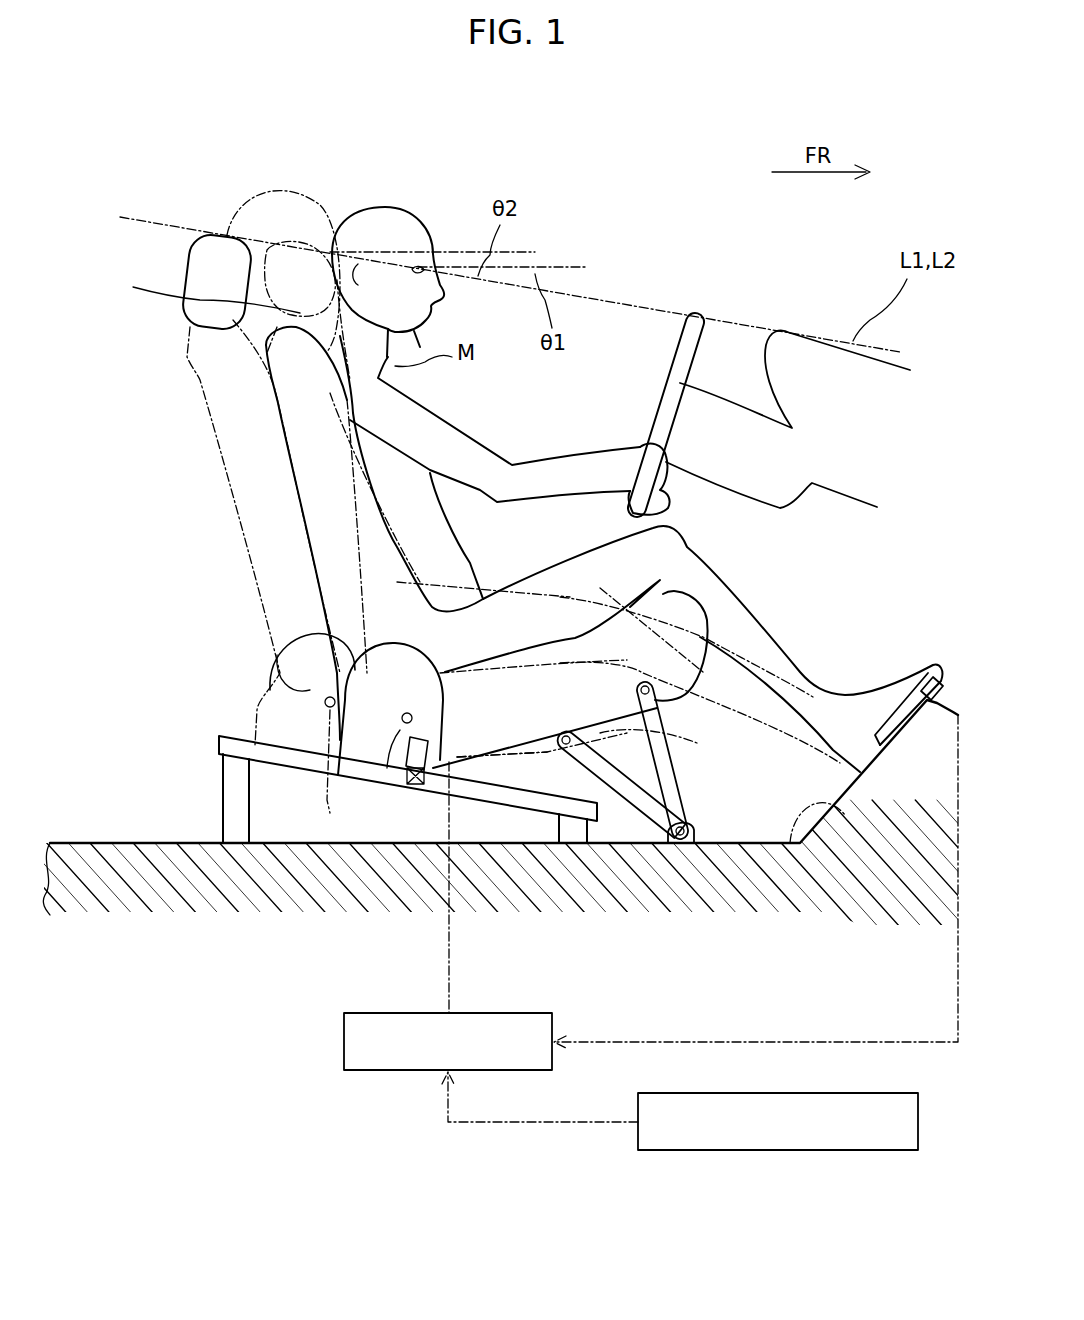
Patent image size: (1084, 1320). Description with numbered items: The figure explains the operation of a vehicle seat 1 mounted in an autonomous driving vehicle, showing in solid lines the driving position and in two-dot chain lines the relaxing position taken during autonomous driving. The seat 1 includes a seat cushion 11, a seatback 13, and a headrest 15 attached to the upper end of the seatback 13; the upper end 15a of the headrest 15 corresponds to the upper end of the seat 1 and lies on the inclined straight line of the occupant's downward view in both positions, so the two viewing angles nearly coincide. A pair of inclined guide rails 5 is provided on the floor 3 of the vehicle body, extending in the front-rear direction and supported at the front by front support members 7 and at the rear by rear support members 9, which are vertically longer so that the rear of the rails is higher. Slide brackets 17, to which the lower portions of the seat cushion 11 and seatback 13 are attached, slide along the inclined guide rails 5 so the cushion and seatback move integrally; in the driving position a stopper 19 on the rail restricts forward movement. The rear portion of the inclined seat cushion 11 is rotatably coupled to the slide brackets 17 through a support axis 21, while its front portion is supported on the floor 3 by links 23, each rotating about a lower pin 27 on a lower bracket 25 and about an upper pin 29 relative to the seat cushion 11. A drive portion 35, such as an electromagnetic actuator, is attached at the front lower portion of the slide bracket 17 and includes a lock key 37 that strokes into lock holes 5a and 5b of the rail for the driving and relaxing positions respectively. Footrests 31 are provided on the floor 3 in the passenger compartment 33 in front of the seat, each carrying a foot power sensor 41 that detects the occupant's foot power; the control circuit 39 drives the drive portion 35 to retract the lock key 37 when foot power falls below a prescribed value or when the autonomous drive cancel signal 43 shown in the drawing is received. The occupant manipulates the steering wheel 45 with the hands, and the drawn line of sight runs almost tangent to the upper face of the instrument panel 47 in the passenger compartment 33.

The seat 1 is at (283, 463).
The floor 3 is at (117, 841).
The inclined guide rails 5 is at (482, 790).
The lock hole 5a is at (397, 770).
The lock hole 5b is at (358, 760).
The front support members 7 is at (573, 828).
The rear support members 9 is at (228, 794).
The seat cushion 11 is at (508, 740).
The seatback 13 is at (313, 568).
The headrest 15 is at (190, 263).
The upper end of the headrest 15a is at (217, 232).
The slide brackets 17 is at (300, 730).
The stopper 19 is at (470, 745).
The support axis 21 is at (406, 752).
The links 23 is at (620, 808).
The lower bracket 25 is at (697, 836).
The lower pin 27 is at (655, 825).
The upper pin 29 is at (650, 698).
The footrests 31 is at (810, 808).
The passenger compartment 33 is at (838, 579).
The drive portion 35 is at (408, 712).
The lock key 37 is at (420, 790).
The control circuit 39 is at (344, 1042).
The foot power sensor 41 is at (938, 672).
The autonomous drive cancel signal 43 is at (733, 1151).
The steering wheel 45 is at (676, 358).
The instrument panel 47 is at (783, 353).